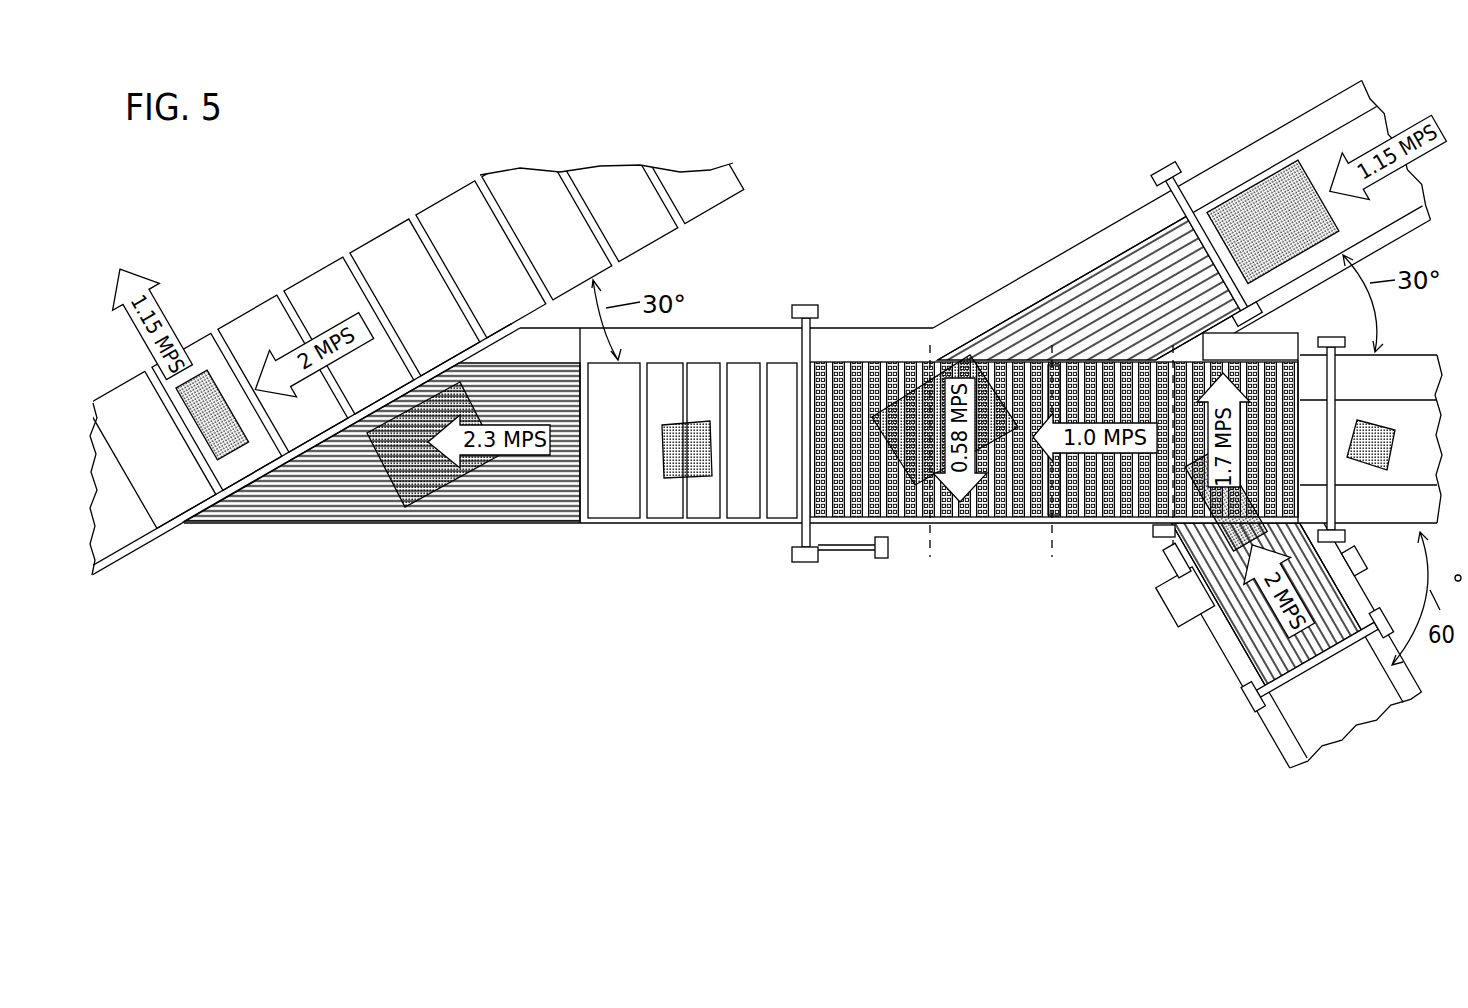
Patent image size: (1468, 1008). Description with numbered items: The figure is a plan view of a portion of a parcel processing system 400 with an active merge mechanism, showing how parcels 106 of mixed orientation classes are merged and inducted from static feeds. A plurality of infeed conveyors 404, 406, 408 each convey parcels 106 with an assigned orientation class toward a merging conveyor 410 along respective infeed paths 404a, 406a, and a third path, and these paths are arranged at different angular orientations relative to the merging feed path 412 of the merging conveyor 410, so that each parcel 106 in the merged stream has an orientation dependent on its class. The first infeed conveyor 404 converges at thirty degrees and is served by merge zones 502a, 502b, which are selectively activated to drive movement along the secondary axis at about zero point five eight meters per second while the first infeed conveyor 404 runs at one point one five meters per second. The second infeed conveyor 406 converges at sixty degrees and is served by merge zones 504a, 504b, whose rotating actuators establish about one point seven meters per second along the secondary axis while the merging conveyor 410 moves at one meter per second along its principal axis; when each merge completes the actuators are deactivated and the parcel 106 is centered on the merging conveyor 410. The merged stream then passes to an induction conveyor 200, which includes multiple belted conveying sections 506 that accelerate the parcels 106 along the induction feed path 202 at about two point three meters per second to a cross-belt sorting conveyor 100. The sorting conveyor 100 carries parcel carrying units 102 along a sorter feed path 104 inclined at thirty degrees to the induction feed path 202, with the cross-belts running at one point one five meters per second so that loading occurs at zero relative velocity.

The sorting conveyor 100 is at (381, 321).
The parcel carrying unit 102 is at (481, 259).
The sorter feed path 104 is at (313, 242).
The parcel 106 is at (223, 440).
The induction conveyor 200 is at (338, 539).
The induction feed path 202 is at (518, 452).
The parcel processing system 400 is at (1120, 421).
The first infeed conveyor 404 is at (1176, 263).
The infeed path 404a is at (1397, 149).
The second infeed conveyor 406 is at (1284, 617).
The infeed path 406a is at (1355, 730).
The infeed conveyor 408 is at (1402, 379).
The merging conveyor 410 is at (1054, 431).
The merging feed path 412 is at (1057, 440).
The merge zone 502a is at (1002, 500).
The merge zone 502b is at (855, 500).
The merge zone 504a is at (1262, 383).
The merge zone 504b is at (1108, 500).
The belted conveying section 506 is at (610, 480).